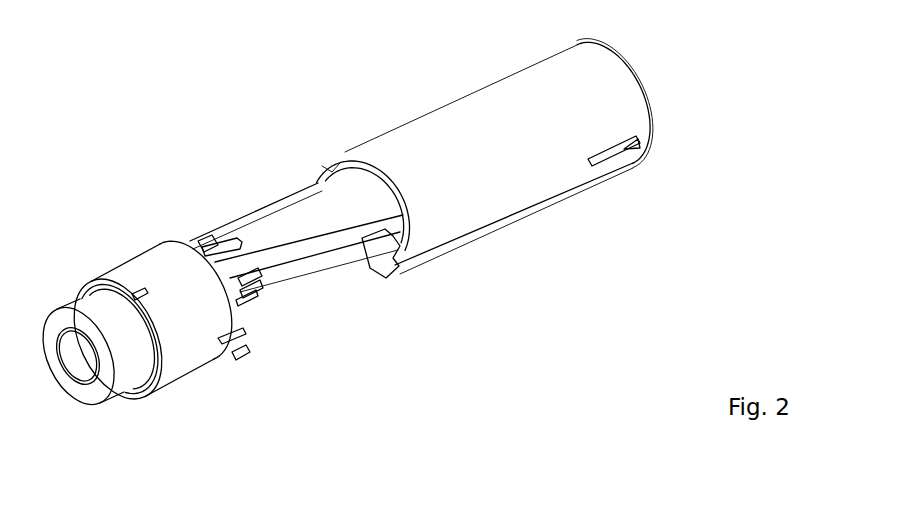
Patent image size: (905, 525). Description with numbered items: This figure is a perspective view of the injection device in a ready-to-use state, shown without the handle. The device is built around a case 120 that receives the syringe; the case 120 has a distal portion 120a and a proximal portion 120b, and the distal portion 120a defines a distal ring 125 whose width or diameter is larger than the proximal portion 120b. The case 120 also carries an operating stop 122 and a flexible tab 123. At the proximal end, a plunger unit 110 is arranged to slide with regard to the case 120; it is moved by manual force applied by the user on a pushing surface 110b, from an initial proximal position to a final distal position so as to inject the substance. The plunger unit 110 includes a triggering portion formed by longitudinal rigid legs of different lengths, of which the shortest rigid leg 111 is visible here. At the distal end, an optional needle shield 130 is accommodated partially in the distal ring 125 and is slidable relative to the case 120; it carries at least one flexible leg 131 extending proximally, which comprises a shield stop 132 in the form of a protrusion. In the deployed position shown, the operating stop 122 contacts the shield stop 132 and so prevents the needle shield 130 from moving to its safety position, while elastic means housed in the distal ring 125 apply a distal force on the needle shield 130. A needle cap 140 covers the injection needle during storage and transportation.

The plunger unit 110 is at (497, 144).
The pushing surface 110b is at (696, 103).
The shortest rigid leg 111 is at (514, 200).
The case 120 is at (300, 203).
The distal portion 120a is at (245, 367).
The proximal portion 120b is at (470, 267).
The operating stop 122 is at (370, 330).
The flexible tab 123 is at (351, 348).
The distal ring 125 is at (144, 307).
The needle shield 130 is at (136, 377).
The flexible leg 131 is at (306, 208).
The shield stop 132 is at (164, 199).
The needle cap 140 is at (202, 8).